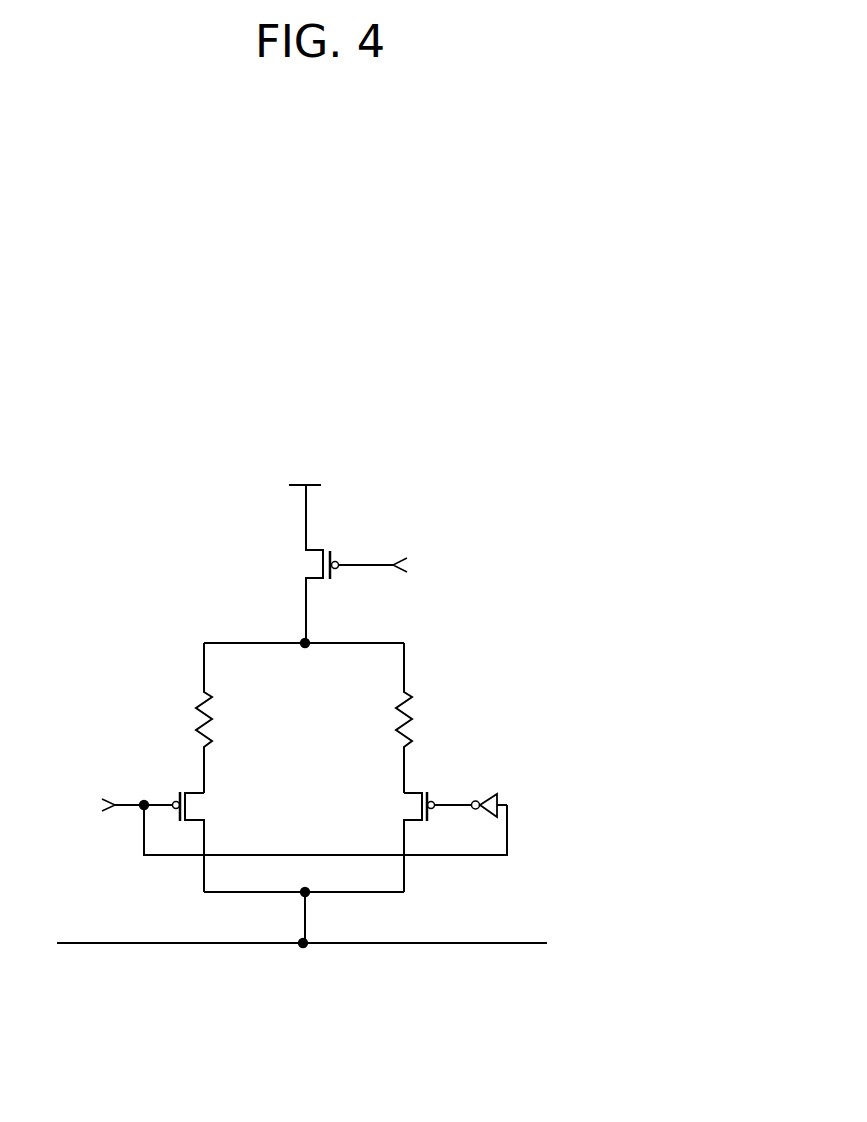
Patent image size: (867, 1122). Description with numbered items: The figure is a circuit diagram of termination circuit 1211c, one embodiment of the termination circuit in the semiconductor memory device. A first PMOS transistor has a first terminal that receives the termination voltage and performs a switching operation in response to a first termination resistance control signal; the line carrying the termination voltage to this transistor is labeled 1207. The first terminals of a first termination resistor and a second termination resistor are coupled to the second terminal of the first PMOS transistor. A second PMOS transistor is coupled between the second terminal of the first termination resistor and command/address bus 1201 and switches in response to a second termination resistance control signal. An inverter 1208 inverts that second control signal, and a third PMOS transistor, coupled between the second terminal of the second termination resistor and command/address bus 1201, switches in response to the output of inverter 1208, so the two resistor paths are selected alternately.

The termination circuit 1211c is at (340, 392).
The pull-up transistor MP1 1207 is at (306, 520).
The inverter 1208 is at (490, 774).
The command/address bus 1201 is at (137, 945).